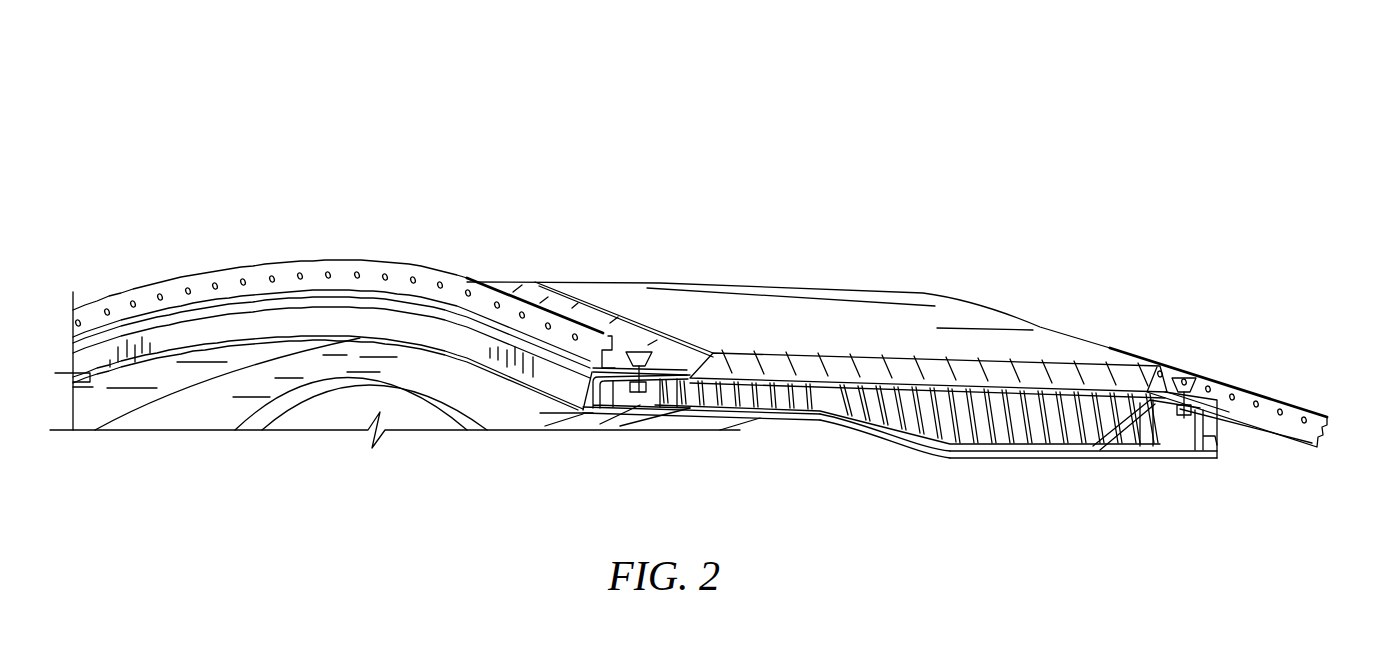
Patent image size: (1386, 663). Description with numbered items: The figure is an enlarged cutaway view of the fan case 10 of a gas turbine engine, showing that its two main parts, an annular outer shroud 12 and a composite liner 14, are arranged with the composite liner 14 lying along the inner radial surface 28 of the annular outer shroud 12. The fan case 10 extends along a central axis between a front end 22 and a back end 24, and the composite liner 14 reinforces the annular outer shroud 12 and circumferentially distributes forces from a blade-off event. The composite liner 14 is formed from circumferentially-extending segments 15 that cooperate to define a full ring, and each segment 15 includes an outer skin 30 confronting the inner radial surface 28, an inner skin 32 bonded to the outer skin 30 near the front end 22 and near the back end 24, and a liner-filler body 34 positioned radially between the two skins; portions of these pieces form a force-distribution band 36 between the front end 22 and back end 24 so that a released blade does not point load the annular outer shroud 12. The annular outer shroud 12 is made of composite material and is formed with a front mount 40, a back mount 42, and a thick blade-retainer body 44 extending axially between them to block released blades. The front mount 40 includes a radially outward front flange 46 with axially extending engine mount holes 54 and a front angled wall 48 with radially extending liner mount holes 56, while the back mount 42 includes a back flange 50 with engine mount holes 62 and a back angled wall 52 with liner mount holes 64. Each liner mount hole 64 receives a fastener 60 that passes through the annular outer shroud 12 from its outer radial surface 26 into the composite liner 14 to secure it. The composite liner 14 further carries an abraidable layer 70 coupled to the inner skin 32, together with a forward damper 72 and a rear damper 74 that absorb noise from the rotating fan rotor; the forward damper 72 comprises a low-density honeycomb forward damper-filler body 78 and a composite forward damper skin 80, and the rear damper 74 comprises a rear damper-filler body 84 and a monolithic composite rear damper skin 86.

The fan case 10 is at (1066, 126).
The annular outer shroud 12 is at (750, 321).
The composite liner 14 is at (758, 425).
The circumferentially-extending segments 15 is at (283, 346).
The front end 22 is at (173, 266).
The back end 24 is at (1340, 393).
The outer radial surface 26 is at (980, 317).
The inner radial surface 28 is at (1067, 388).
The outer skin 30 is at (793, 406).
The inner skin 32 is at (873, 428).
The liner-filler body 34 is at (940, 425).
The force-distribution band 36 is at (1003, 466).
The front mount 40 is at (526, 279).
The back mount 42 is at (1283, 377).
The blade-retainer body 44 is at (870, 357).
The front flange 46 is at (374, 277).
The front angled wall 48 is at (617, 356).
The back flange 50 is at (1247, 394).
The back angled wall 52 is at (1280, 440).
The engine mount holes 54 is at (413, 286).
The liner mount holes 56 is at (680, 395).
The fastener 60 is at (644, 352).
The engine mount holes 62 is at (1229, 388).
The liner mount holes 64 is at (1230, 419).
The abraidable layer 70 is at (1047, 452).
The forward damper 72 is at (594, 424).
The rear damper 74 is at (1164, 466).
The forward damper-filler body 78 is at (623, 418).
The forward damper skin 80 is at (638, 416).
The rear damper-filler body 84 is at (1120, 435).
The rear damper skin 86 is at (1133, 455).